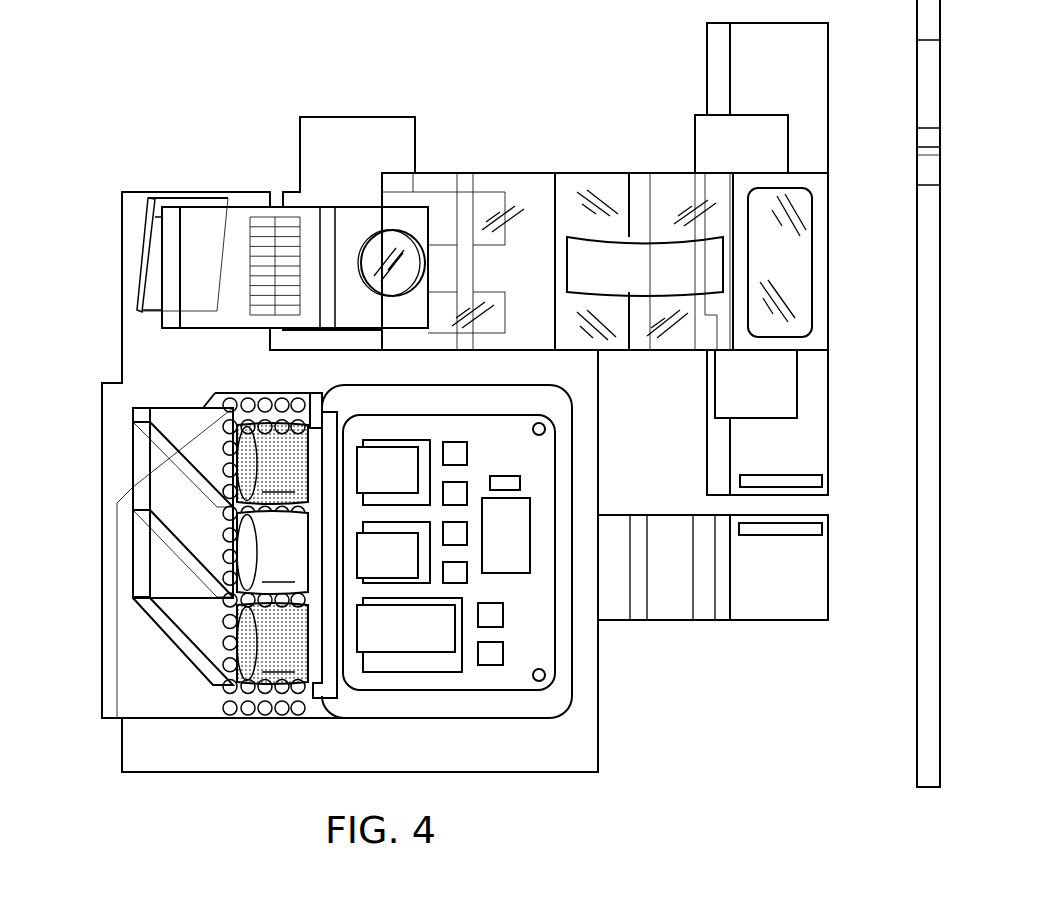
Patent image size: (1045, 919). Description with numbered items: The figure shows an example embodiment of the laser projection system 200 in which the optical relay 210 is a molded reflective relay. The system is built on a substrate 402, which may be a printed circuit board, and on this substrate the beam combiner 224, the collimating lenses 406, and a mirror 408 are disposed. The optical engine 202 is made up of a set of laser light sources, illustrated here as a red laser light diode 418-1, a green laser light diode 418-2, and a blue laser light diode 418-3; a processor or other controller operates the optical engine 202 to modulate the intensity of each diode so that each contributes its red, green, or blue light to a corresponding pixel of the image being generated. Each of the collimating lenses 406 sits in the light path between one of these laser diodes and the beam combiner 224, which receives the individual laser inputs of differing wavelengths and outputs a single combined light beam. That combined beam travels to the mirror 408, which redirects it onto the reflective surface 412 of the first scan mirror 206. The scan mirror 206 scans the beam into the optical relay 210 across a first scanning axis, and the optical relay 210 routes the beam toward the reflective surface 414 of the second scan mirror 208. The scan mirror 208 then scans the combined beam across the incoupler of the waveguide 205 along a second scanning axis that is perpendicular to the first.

The laser projection system 200 is at (426, 61).
The optical engine 202 is at (520, 745).
The waveguide 205 is at (912, 680).
The scan mirror 206 is at (292, 188).
The scan mirror 208 is at (707, 63).
The optical relay 210 is at (558, 149).
The beam combiner 224 is at (155, 656).
The substrate 402 is at (450, 579).
The collimating lenses 406 is at (282, 698).
The mirror 408 is at (157, 277).
The reflective surface 412 is at (385, 248).
The reflective surface 414 is at (830, 258).
The red laser light diode 418-1 is at (447, 618).
The green laser light diode 418-2 is at (412, 547).
The blue laser light diode 418-3 is at (412, 459).